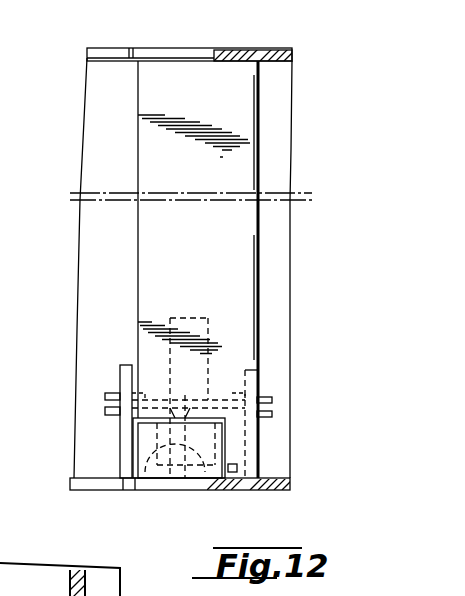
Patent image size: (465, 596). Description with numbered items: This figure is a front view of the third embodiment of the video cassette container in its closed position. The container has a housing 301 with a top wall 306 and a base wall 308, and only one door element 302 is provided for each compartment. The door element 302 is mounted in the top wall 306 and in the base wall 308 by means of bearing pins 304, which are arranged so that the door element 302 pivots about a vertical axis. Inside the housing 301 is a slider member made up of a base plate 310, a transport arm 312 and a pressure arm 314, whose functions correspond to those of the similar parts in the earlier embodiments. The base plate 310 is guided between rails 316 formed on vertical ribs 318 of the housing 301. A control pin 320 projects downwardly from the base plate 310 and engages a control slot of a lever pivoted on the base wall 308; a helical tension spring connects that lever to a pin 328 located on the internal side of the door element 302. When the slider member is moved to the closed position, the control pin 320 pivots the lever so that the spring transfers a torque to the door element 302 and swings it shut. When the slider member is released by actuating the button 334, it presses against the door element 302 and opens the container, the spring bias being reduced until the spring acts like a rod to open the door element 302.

The housing 301 is at (87, 497).
The door element 302 is at (245, 150).
The bearing pins 304 is at (255, 50).
The top wall 306 is at (233, 50).
The base wall 308 is at (284, 492).
The base plate 310 is at (223, 390).
The transport arm 312 is at (194, 318).
The pressure arm 314 is at (143, 492).
The rails 316 is at (105, 411).
The vertical ribs 318 is at (120, 459).
The control pin 320 is at (200, 492).
The pin 328 is at (237, 468).
The button 334 is at (165, 492).